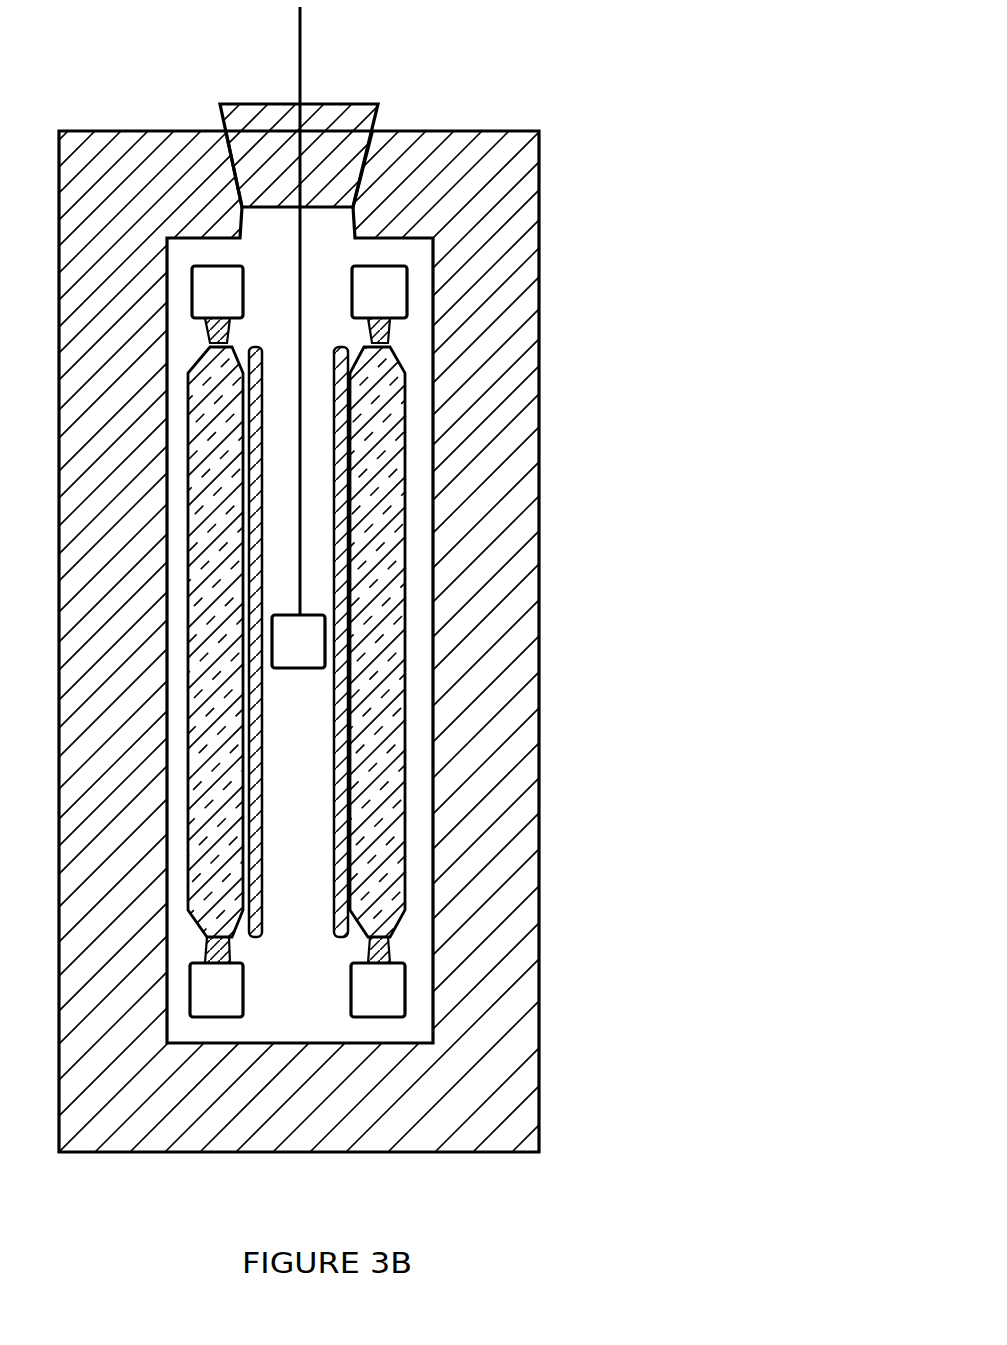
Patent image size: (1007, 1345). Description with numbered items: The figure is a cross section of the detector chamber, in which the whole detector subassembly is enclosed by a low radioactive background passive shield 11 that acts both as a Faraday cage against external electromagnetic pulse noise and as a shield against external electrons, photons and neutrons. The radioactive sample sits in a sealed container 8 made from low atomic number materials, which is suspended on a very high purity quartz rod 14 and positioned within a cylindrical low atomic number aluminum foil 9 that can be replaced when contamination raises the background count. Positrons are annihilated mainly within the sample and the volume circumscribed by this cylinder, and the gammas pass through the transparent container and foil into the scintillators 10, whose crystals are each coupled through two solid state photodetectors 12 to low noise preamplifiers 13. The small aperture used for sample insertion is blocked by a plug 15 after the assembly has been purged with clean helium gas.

The container 8 is at (312, 633).
The aluminum foil 9 is at (347, 382).
The scintillators 10 is at (382, 733).
The passive shield 11 is at (477, 183).
The solid state photodetectors 12 is at (383, 952).
The low noise preamplifiers 13 is at (383, 992).
The quartz rod 14 is at (298, 493).
The plug 15 is at (337, 100).